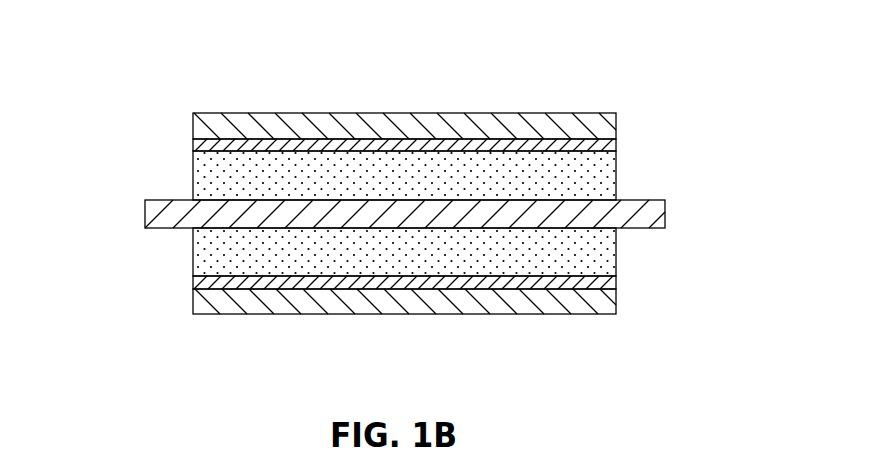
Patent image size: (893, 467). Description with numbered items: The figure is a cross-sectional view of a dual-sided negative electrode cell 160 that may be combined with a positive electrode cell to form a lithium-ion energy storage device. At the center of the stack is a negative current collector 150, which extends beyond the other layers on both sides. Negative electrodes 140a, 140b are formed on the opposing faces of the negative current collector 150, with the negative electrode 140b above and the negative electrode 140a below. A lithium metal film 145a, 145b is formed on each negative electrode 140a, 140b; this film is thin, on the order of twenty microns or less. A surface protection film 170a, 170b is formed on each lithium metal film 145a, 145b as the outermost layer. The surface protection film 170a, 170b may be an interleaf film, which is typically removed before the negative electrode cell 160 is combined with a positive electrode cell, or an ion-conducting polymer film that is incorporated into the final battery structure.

The negative electrode cell 160 is at (141, 54).
The surface protection film 170b is at (616, 124).
The lithium metal film 145a is at (193, 145).
The negative electrode 140b is at (616, 176).
The negative current collector 150 is at (665, 215).
The negative electrode 140a is at (616, 250).
The lithium metal film 145b is at (193, 283).
The surface protection film 170a is at (616, 303).